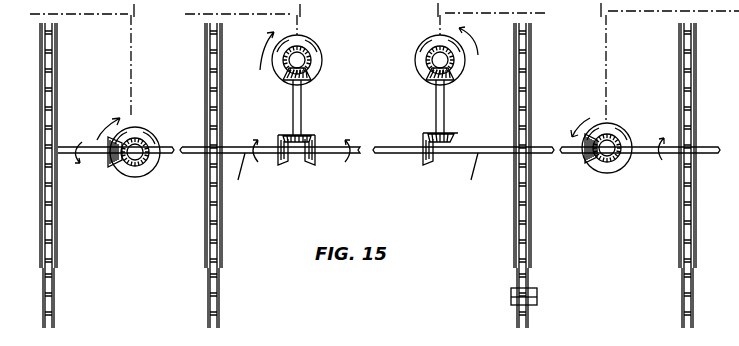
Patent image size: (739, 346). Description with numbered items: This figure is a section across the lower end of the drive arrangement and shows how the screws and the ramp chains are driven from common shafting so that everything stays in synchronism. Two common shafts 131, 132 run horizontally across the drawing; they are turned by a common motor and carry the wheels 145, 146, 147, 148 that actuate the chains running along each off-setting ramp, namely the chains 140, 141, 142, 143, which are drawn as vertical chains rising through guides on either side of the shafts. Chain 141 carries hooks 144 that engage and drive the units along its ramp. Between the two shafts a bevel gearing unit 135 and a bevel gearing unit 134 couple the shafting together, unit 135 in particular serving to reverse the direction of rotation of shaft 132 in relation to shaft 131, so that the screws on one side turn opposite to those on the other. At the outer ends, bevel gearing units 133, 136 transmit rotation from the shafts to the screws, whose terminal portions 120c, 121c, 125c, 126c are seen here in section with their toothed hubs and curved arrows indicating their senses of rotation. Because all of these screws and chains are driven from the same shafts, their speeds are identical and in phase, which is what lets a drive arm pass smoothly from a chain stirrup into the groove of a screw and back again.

The terminal portion of screw 120c is at (622, 128).
The terminal portion of screw 121c is at (146, 127).
The terminal portion of screw 125c is at (418, 62).
The terminal portion of screw 126c is at (314, 50).
The common shaft 131 is at (546, 175).
The common shaft 132 is at (209, 175).
The bevel gearing unit 133 is at (582, 165).
The bevel gearing unit 134 is at (484, 115).
The bevel gearing unit 135 is at (280, 125).
The bevel gearing unit 136 is at (106, 167).
The chain 140 is at (682, 284).
The chain 141 is at (531, 280).
The chain 142 is at (208, 306).
The chain 143 is at (56, 302).
The hook 144 is at (511, 300).
The wheel 145 is at (679, 240).
The wheel 146 is at (532, 236).
The wheel 147 is at (205, 240).
The wheel 148 is at (58, 236).